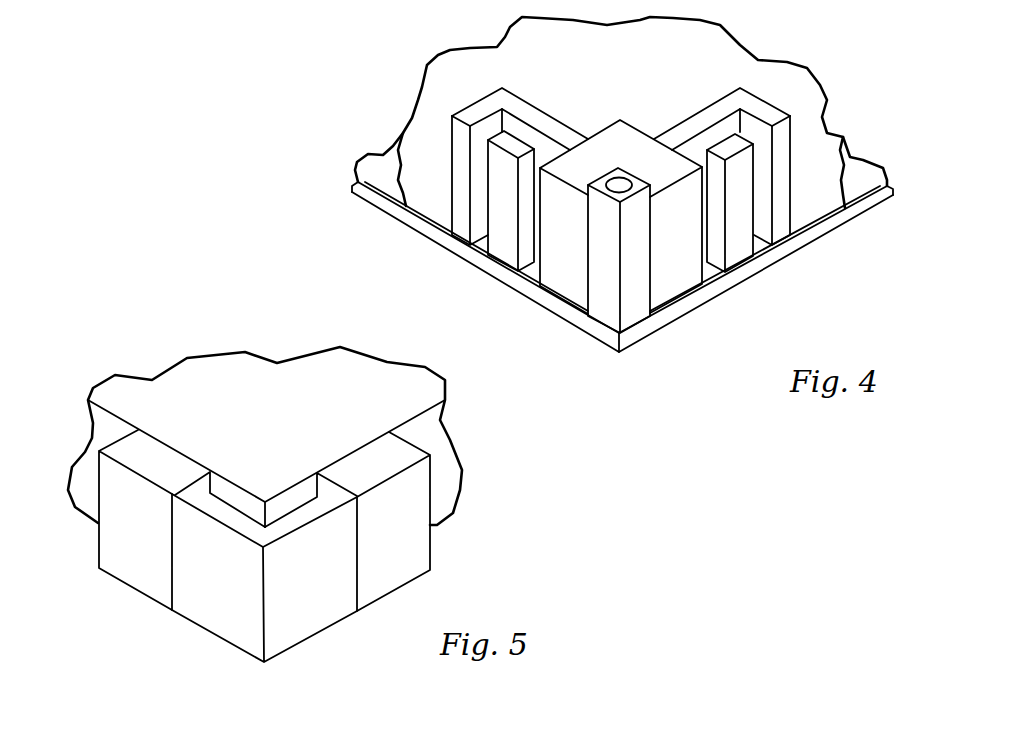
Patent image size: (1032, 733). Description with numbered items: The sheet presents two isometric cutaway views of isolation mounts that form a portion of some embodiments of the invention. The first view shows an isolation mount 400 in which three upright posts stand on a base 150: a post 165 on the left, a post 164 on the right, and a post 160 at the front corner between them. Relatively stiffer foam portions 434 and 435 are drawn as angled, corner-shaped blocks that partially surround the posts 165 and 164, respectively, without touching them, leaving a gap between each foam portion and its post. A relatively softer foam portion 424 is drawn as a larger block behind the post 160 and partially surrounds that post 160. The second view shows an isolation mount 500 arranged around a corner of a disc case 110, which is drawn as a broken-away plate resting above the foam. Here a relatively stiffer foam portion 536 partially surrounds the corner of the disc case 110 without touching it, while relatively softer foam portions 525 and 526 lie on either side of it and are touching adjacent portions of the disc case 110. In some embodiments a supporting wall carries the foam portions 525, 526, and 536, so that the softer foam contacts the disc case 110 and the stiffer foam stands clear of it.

In FIG. 4, the isolation mount 400 is at (385, 41).
In FIG. 4, the disc case 110 is at (421, 88).
In FIG. 5, the disc case 110 is at (183, 370).
In FIG. 4, the base 150 is at (657, 327).
In FIG. 4, the post 160 is at (605, 293).
In FIG. 4, the post 164 is at (740, 243).
In FIG. 4, the post 165 is at (502, 240).
In FIG. 4, the relatively softer foam portion 424 is at (647, 147).
In FIG. 4, the relatively stiffer foam portion 434 is at (536, 115).
In FIG. 4, the relatively stiffer foam portion 435 is at (757, 105).
In FIG. 5, the isolation mount 500 is at (146, 322).
In FIG. 5, the relatively softer foam portion 525 is at (172, 462).
In FIG. 5, the relatively softer foam portion 526 is at (361, 470).
In FIG. 5, the relatively stiffer foam portion 536 is at (233, 510).